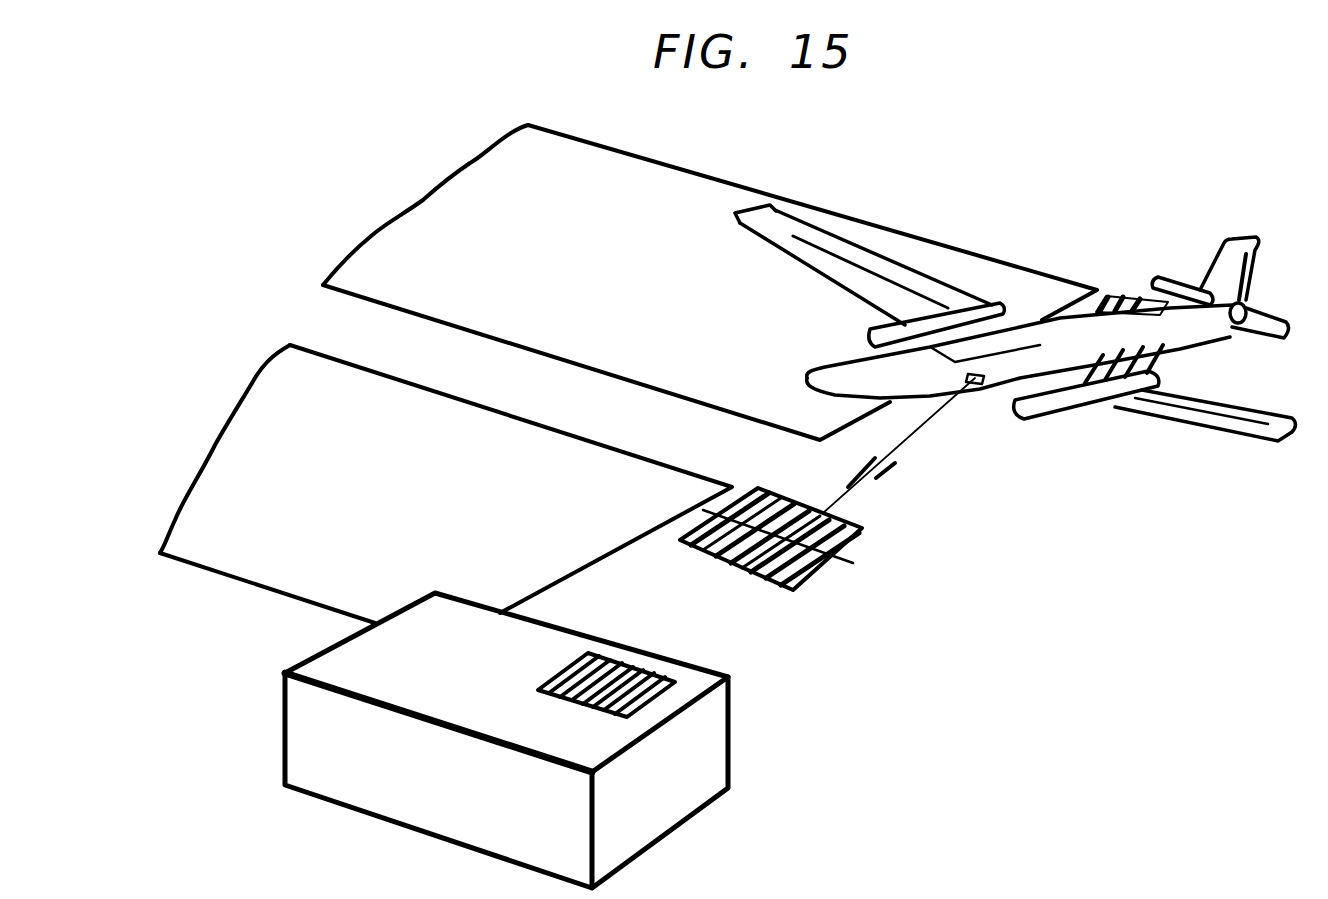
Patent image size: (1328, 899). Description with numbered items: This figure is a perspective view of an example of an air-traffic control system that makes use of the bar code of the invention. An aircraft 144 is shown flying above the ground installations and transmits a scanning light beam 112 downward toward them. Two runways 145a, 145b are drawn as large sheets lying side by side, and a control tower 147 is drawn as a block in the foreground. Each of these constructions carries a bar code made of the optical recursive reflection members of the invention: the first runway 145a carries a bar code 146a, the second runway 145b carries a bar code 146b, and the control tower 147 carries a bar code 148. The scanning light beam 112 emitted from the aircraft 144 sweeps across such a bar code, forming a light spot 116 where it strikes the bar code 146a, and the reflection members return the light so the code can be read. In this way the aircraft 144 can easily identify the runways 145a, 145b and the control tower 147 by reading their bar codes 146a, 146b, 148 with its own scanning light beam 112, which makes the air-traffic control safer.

The scanning light beam 112 is at (927, 423).
The light spot 116 is at (868, 475).
The aircraft 144 is at (1015, 339).
The runway 145a is at (257, 382).
The runway 145b is at (737, 180).
The bar code 146a is at (823, 567).
The bar code 146b is at (1130, 300).
The control tower 147 is at (549, 740).
The bar code 148 is at (665, 695).